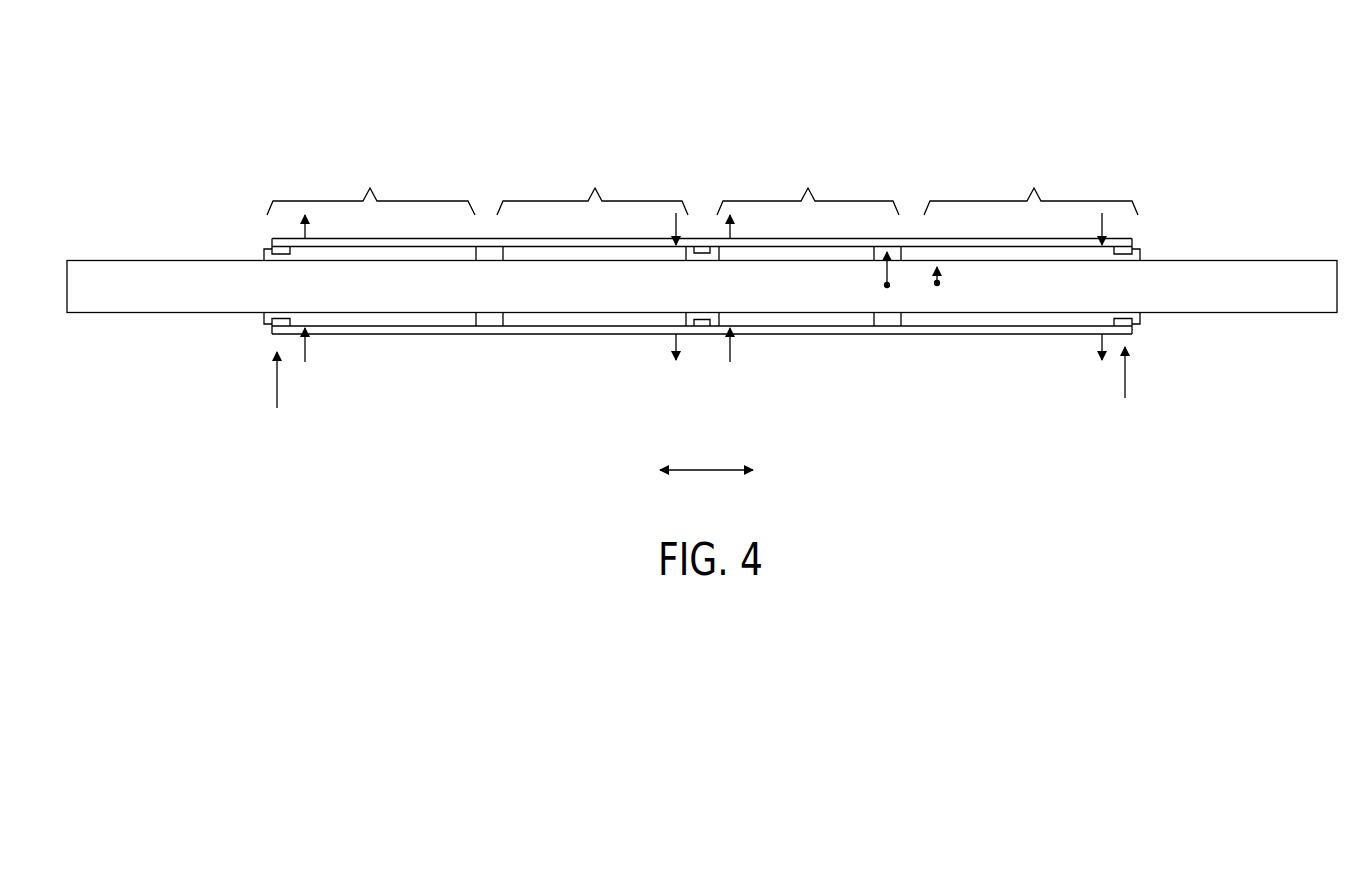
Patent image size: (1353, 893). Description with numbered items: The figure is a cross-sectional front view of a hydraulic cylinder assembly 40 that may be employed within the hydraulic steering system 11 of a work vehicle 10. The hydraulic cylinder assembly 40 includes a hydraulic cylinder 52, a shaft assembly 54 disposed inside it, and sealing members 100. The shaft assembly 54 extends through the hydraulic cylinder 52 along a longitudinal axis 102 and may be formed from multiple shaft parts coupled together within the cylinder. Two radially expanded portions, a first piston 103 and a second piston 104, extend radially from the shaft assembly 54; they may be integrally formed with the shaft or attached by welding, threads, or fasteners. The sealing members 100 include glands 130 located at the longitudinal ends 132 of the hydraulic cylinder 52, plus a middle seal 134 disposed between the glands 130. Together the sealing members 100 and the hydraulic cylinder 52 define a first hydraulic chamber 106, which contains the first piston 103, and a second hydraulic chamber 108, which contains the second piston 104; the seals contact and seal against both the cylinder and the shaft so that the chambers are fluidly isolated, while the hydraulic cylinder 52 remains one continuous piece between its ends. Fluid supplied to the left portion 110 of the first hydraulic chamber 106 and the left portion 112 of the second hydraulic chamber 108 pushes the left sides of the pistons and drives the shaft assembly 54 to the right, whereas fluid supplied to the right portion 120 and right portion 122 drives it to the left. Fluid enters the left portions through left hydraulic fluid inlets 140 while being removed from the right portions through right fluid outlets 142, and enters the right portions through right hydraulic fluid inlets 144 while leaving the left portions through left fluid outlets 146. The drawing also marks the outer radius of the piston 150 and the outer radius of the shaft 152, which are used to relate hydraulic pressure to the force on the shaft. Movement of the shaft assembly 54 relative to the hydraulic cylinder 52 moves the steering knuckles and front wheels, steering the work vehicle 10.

The work vehicle 10 is at (1126, 74).
The hydraulic steering system 11 is at (871, 123).
The hydraulic cylinder assembly 40 is at (705, 141).
The hydraulic cylinder 52 is at (418, 335).
The shaft assembly 54 is at (158, 313).
The sealing members 100 is at (259, 320).
The longitudinal axis 102 is at (712, 466).
The first piston 103 is at (490, 254).
The second piston 104 is at (897, 253).
The first hydraulic chamber 106 is at (517, 324).
The second hydraulic chamber 108 is at (913, 324).
The left portion of the first hydraulic chamber 110 is at (371, 186).
The left portion of the second hydraulic chamber 112 is at (808, 186).
The right portion of the first hydraulic chamber 120 is at (592, 186).
The right portion of the second hydraulic chamber 122 is at (1031, 186).
The glands 130 is at (260, 249).
The longitudinal ends 132 is at (243, 326).
The middle seal 134 is at (703, 232).
The left hydraulic fluid inlets 140 is at (310, 352).
The right fluid outlets 142 is at (672, 352).
The right hydraulic fluid inlets 144 is at (673, 232).
The left fluid outlets 146 is at (310, 234).
The outer radius of the piston 150 is at (885, 284).
The outer radius of the shaft 152 is at (940, 285).